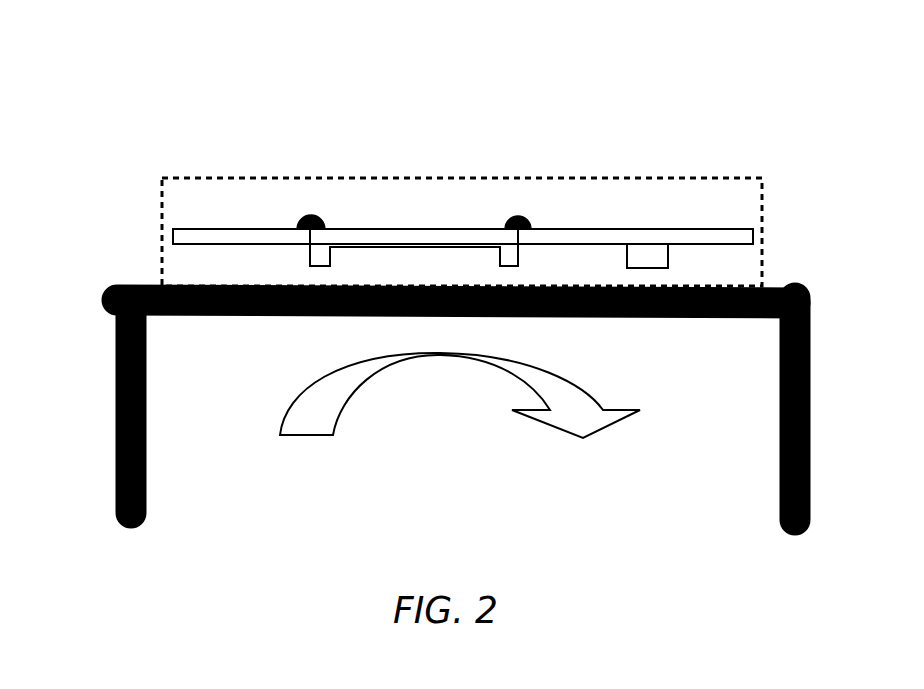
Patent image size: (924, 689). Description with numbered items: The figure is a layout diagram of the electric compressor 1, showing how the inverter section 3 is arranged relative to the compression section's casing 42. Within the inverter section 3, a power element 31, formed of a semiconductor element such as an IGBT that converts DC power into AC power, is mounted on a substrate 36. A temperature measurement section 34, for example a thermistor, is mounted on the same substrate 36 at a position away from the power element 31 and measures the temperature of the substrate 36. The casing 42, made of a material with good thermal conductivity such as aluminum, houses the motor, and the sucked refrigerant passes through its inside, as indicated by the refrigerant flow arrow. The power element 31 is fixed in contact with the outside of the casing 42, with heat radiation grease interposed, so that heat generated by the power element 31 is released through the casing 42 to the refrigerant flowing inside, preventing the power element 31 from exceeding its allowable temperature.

The electric compressor 1 is at (100, 114).
The inverter section 3 is at (766, 202).
The power element 31 is at (416, 258).
The temperature measurement section 34 is at (645, 250).
The substrate 36 is at (213, 225).
The casing 42 is at (822, 400).